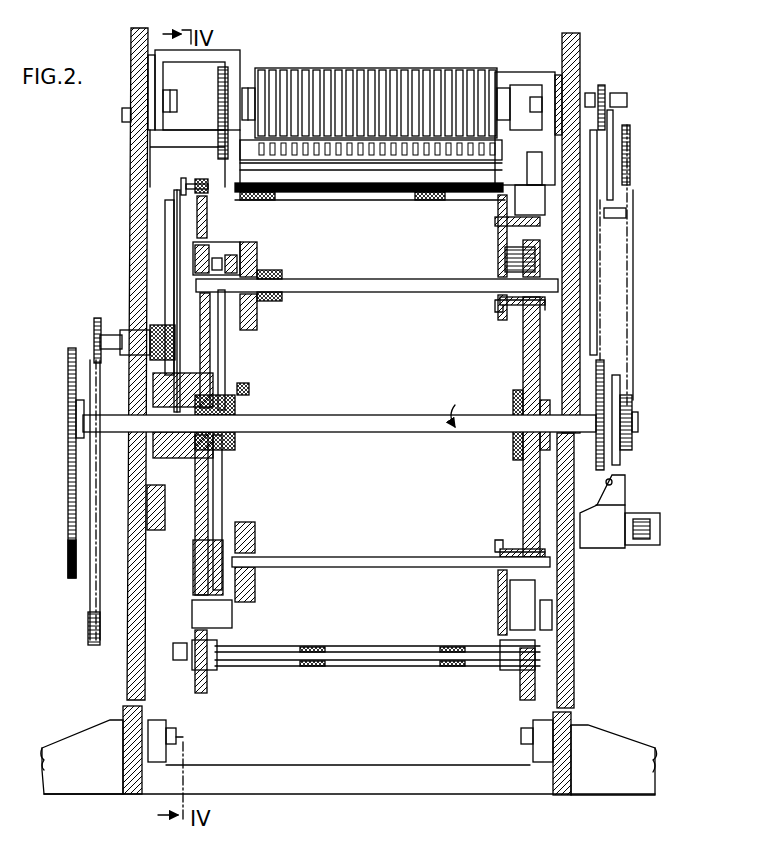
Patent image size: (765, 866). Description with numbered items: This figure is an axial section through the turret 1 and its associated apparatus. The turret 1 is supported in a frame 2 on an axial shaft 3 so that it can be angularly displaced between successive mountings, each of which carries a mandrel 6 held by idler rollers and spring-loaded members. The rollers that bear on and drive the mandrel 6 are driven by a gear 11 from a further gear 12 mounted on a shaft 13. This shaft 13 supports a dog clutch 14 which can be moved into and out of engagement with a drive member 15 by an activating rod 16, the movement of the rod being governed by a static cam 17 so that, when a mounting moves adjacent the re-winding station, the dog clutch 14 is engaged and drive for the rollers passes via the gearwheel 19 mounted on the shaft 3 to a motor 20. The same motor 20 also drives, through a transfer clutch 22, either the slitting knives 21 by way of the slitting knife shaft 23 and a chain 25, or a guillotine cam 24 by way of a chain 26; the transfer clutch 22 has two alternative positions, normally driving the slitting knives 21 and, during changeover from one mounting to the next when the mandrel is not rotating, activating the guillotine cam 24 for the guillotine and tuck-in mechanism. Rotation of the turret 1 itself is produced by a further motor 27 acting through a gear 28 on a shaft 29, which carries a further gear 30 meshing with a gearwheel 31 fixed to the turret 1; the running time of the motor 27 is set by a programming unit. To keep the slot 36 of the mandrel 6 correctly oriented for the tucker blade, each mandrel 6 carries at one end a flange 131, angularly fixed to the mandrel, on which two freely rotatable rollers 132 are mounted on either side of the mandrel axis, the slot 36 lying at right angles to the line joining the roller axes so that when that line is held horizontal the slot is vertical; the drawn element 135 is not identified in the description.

The turret 1 is at (530, 355).
The frame 2 is at (133, 242).
The axial shaft 3 is at (362, 417).
The mandrel 6 is at (331, 195).
The gear 11 is at (503, 253).
The further gear 12 is at (492, 303).
The shaft 13 is at (432, 283).
The dog clutch 14 is at (260, 262).
The drive member 15 is at (236, 252).
The activating rod 16 is at (193, 263).
The static cam 17 is at (215, 376).
The gearwheel 19 is at (227, 355).
The motor 20 is at (66, 561).
The slitting knives 21 is at (349, 82).
The transfer clutch 22 is at (621, 407).
The slitting knife shaft 23 is at (522, 100).
The guillotine cam 24 is at (612, 190).
The chain 25 is at (602, 305).
The chain 26 is at (629, 268).
The further motor 27 is at (88, 628).
The gear 28 is at (95, 330).
The shaft 29 is at (120, 343).
The further gear 30 is at (150, 330).
The gearwheel 31 is at (252, 388).
The slot 36 is at (386, 194).
The flange 131 is at (200, 195).
The rollers 132 is at (190, 186).
The guide plate 135 is at (172, 278).